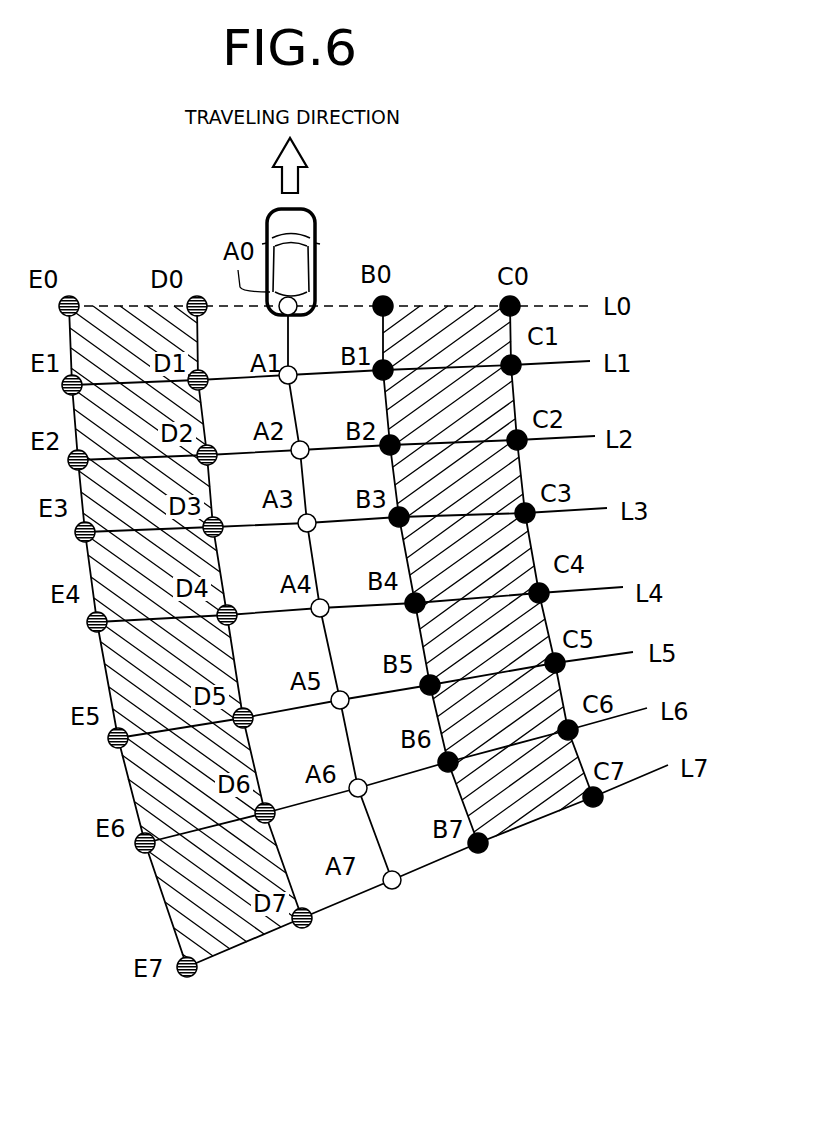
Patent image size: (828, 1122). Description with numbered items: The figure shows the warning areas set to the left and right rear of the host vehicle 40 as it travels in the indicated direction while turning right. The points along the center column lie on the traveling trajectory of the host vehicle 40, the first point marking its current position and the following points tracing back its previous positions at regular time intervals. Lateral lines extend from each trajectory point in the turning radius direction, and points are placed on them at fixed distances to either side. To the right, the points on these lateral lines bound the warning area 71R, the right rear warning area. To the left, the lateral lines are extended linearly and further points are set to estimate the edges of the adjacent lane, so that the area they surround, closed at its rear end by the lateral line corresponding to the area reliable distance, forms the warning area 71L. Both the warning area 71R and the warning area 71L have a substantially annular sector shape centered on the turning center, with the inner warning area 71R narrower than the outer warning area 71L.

The host vehicle 40 is at (312, 228).
The warning area 71L is at (120, 328).
The warning area 71R is at (435, 317).